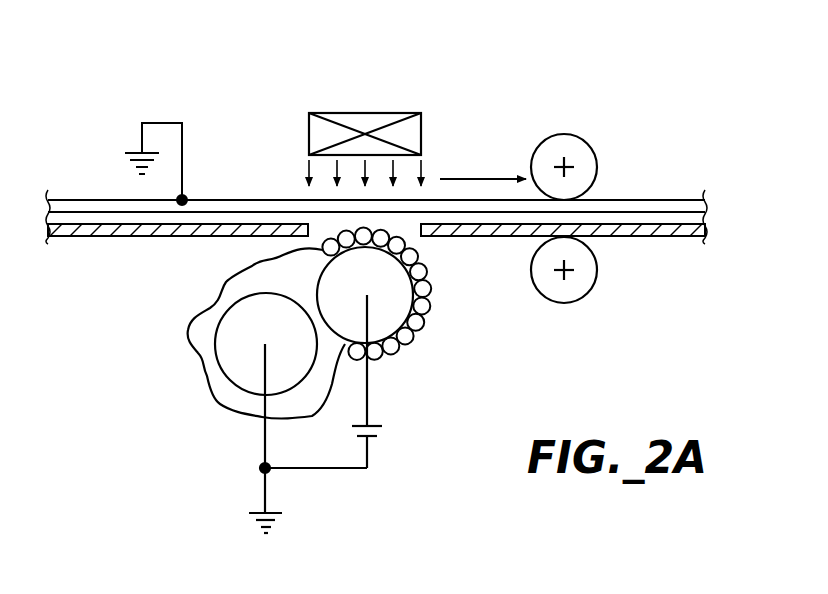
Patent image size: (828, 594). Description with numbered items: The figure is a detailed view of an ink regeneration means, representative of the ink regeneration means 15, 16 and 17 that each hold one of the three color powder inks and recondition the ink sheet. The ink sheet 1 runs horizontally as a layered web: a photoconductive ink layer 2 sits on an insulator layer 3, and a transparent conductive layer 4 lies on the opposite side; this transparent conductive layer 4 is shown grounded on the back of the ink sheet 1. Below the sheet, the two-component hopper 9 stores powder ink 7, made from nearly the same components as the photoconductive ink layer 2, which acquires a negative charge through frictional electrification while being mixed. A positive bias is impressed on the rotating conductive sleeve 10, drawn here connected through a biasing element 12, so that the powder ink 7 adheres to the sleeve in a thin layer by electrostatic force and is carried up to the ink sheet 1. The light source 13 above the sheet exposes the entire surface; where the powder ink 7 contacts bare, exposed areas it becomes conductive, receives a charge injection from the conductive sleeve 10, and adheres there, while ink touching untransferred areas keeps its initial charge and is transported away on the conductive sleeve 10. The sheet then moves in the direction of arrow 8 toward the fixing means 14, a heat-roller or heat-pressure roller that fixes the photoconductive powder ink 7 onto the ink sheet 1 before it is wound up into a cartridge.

The ink sheet 1 is at (395, 200).
The photoconductive ink layer 2 is at (705, 236).
The insulator layer 3 is at (705, 213).
The transparent conductive layer 4 is at (705, 200).
The powder ink 7 is at (432, 282).
The belt movement direction 8 is at (490, 177).
The two-component hopper 9 is at (198, 353).
The conductive sleeve 10 is at (390, 311).
The capacitor (bias) 12 is at (374, 438).
The light source 13 is at (308, 128).
The fixing means 14 is at (547, 293).
The ink regeneration means 15 is at (568, 51).
The ink regeneration means 16 is at (568, 51).
The ink regeneration means 17 is at (493, 77).